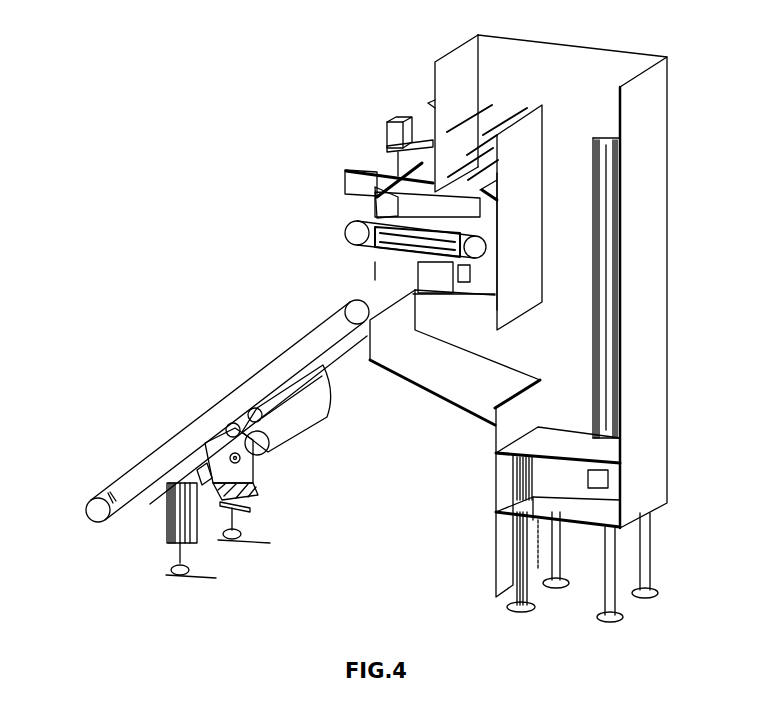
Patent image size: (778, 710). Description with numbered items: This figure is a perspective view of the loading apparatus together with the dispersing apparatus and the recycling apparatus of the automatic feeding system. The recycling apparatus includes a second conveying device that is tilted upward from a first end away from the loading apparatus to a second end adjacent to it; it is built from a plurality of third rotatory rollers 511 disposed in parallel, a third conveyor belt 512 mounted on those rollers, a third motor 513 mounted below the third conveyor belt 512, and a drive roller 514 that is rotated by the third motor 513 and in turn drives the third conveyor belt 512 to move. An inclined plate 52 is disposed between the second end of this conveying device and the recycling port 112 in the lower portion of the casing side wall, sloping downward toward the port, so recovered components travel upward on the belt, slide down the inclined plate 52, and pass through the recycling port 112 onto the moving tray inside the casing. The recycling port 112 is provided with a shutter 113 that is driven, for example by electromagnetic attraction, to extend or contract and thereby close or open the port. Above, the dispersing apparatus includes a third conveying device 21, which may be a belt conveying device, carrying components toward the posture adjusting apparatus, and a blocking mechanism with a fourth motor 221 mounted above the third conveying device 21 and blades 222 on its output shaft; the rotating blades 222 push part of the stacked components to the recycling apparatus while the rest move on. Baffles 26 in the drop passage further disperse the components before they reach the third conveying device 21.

The recycling port 112 is at (527, 347).
The shutter 113 is at (520, 422).
The baffles 26 is at (473, 117).
The third conveying device 21 is at (412, 217).
The fourth motor 221 is at (390, 123).
The blades 222 is at (358, 180).
The inclined plate 52 is at (423, 371).
The third rotatory rollers 511 is at (96, 505).
The third conveyor belt 512 is at (243, 405).
The third motor 513 is at (223, 470).
The drive roller 514 is at (258, 450).